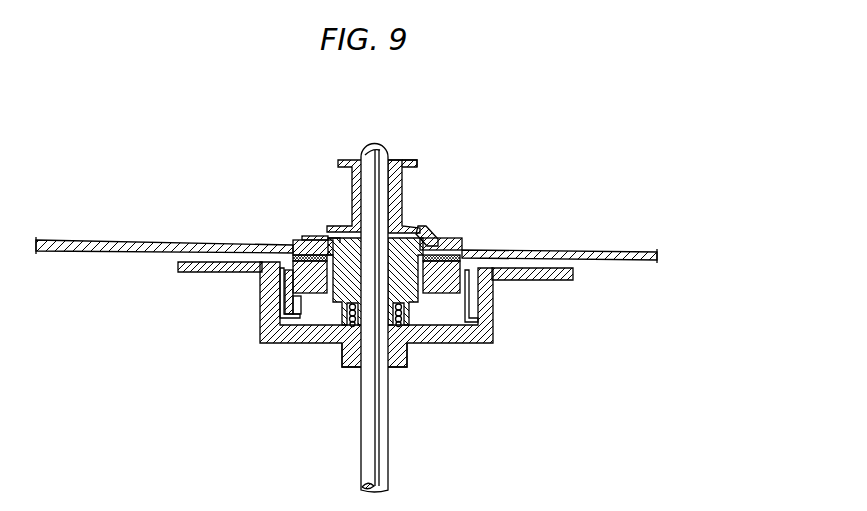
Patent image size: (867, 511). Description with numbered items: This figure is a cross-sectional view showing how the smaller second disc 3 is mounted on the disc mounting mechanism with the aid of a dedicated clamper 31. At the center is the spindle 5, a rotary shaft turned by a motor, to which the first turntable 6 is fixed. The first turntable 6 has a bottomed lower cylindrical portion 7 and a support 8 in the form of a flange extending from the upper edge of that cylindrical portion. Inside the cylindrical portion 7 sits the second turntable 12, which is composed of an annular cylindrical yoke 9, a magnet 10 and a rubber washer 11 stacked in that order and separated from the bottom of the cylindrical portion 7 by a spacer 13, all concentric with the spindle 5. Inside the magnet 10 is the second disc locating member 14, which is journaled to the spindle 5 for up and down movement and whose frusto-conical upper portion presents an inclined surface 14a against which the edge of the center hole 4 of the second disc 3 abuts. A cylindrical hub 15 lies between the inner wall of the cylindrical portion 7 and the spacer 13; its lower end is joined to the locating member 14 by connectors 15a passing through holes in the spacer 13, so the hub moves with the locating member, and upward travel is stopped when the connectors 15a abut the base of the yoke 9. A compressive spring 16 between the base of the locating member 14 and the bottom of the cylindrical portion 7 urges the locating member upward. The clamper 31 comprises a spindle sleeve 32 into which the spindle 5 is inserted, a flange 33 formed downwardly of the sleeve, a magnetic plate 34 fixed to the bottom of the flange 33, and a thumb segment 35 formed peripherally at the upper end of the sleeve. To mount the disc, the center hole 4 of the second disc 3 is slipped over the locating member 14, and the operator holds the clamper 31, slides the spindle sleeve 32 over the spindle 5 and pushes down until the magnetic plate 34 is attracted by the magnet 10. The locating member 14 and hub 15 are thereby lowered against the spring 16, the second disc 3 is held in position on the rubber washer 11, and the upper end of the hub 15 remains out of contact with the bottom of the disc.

The second disc 3 is at (604, 250).
The center hole of the second disc 4 is at (428, 232).
The spindle 5 is at (378, 141).
The first turntable 6 is at (468, 368).
The bottomed lower cylindrical portion 7 is at (494, 335).
The support 8 is at (548, 281).
The cylindrical yoke 9 is at (295, 318).
The magnet 10 is at (285, 305).
The rubber washer 11 is at (299, 253).
The second turntable 12 is at (292, 243).
The spacer 13 is at (306, 296).
The second disc locating member 14 is at (345, 240).
The inclined surface 14a is at (335, 237).
The cylindrical hub 15 is at (281, 289).
The connectors 15a is at (480, 344).
The compressive spring 16 is at (350, 326).
The clamper 31 is at (403, 159).
The spindle sleeve 32 is at (403, 187).
The flange 33 is at (433, 243).
The magnetic plate 34 is at (462, 246).
The thumb segment 35 is at (418, 166).